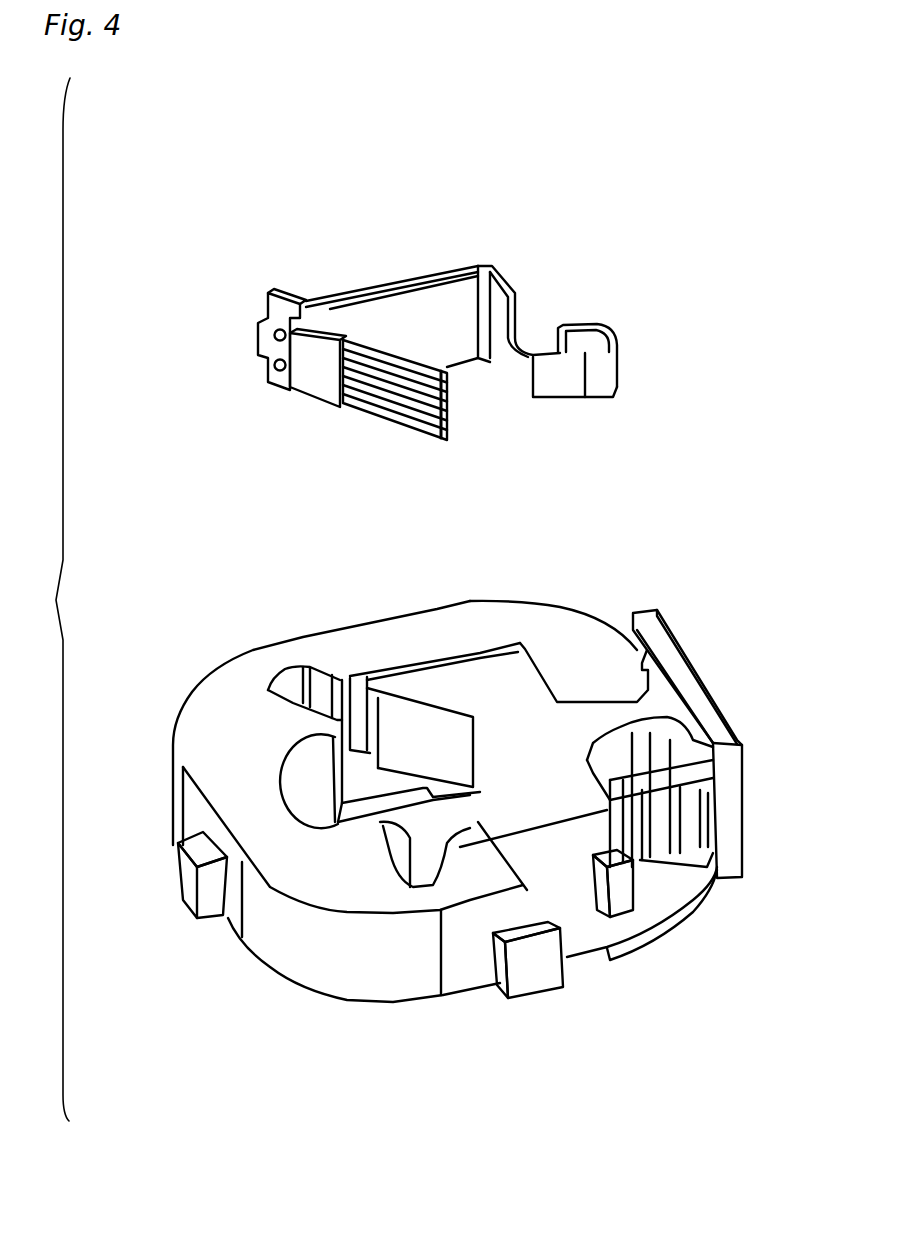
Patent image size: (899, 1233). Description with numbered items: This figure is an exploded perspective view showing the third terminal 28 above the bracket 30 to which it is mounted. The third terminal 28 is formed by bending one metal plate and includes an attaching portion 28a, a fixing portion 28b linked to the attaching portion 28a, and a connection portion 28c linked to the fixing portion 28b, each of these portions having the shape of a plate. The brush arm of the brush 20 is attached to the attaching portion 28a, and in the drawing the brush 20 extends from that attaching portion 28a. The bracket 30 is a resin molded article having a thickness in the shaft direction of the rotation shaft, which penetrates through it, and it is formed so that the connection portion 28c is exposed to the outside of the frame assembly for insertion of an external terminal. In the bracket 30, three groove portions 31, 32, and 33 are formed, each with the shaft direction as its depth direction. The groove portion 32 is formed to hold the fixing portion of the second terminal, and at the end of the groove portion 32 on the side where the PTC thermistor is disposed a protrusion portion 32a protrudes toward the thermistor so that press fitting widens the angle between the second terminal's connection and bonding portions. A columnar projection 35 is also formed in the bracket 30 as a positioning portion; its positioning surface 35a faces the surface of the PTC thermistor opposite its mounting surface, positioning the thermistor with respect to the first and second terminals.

The brush 20 is at (360, 413).
The third terminal 28 is at (505, 253).
The attaching portion 28a is at (287, 297).
The fixing portion 28b is at (393, 285).
The connection portion 28c is at (593, 330).
The bracket 30 is at (770, 667).
The groove portion 31 is at (473, 837).
The groove portion 32 is at (610, 790).
The protrusion portion 32a is at (640, 833).
The groove portion 33 is at (437, 657).
The columnar projection 35 is at (622, 888).
The positioning surface 35a is at (593, 863).